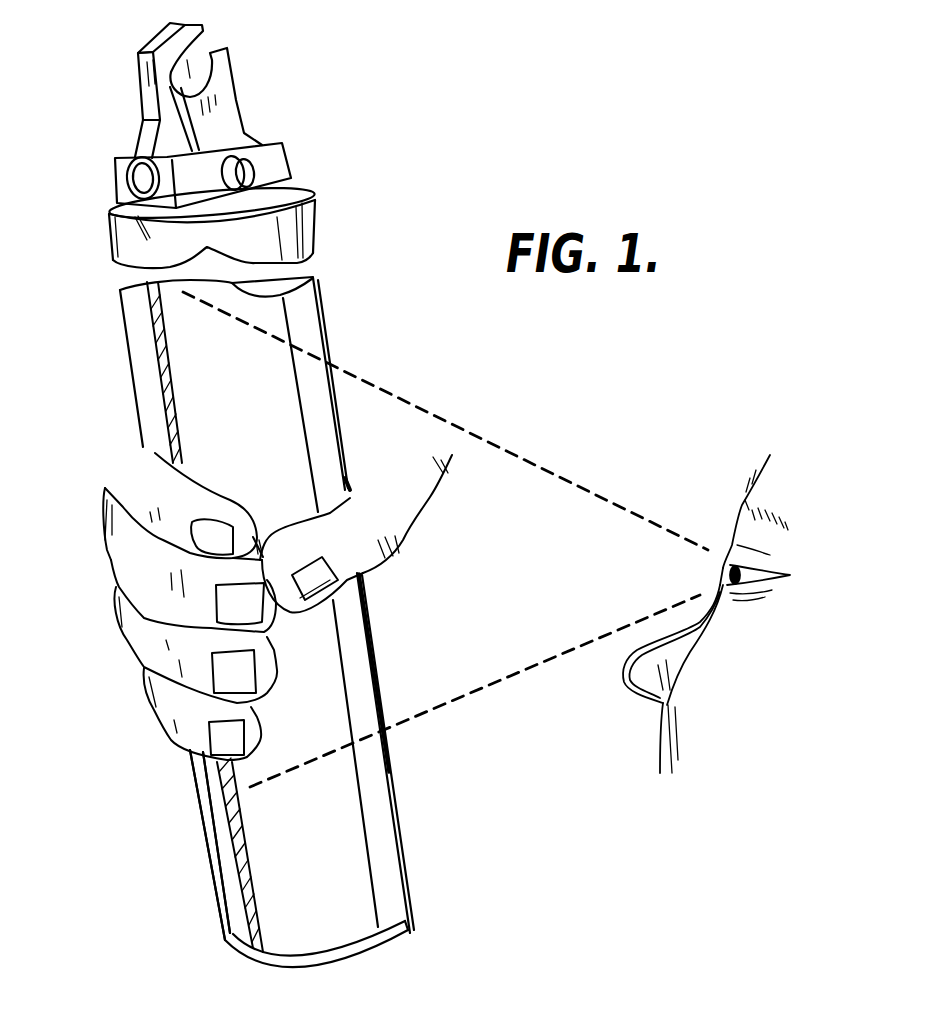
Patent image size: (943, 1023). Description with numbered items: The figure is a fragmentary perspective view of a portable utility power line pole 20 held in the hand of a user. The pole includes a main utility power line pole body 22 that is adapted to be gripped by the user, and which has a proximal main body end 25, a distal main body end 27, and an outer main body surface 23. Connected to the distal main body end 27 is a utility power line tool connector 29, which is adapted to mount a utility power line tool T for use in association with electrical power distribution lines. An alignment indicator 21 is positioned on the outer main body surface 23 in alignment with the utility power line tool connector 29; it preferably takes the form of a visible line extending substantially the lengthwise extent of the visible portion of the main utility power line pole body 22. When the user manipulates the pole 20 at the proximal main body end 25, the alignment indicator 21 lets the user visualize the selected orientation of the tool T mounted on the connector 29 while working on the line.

The utility power line tool T is at (147, 97).
The utility power line tool connector 29 is at (283, 144).
The distal main body end 27 is at (95, 223).
The portable utility power line pole 20 is at (400, 368).
The main utility power line pole body 22 is at (404, 784).
The outer main body surface 23 is at (217, 780).
The alignment indicator 21 is at (240, 897).
The proximal main body end 25 is at (381, 960).